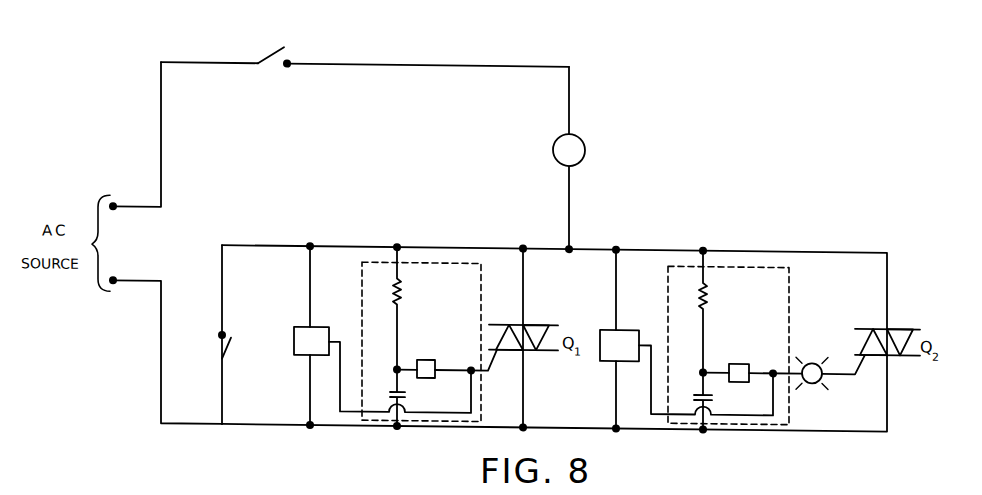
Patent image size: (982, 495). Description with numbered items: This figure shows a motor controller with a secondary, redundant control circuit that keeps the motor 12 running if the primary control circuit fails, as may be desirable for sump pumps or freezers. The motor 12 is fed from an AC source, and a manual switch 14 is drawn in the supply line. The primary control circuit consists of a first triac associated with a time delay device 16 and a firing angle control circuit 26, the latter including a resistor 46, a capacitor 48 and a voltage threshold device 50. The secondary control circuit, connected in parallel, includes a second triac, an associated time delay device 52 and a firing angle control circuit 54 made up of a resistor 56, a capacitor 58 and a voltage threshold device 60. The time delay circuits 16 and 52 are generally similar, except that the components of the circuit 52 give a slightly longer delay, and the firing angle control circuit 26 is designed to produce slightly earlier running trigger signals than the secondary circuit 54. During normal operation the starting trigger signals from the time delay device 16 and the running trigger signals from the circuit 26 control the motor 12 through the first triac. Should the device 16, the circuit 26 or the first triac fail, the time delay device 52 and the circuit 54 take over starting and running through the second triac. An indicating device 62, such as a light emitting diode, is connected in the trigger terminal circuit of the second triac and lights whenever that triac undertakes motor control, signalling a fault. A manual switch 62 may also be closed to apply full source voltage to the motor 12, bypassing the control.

The motor 12 is at (579, 136).
The switch 14 is at (279, 51).
The time delay device 16 is at (318, 323).
The firing angle control circuit 26 is at (483, 290).
The resistor 46 is at (401, 288).
The capacitor 48 is at (404, 388).
The voltage threshold device 50 is at (425, 355).
The time delay device 52 is at (622, 323).
The firing angle control circuit 54 is at (789, 296).
The resistor 56 is at (707, 288).
The capacitor 58 is at (711, 390).
The voltage threshold device 60 is at (738, 356).
The indicating device 62 is at (830, 389).